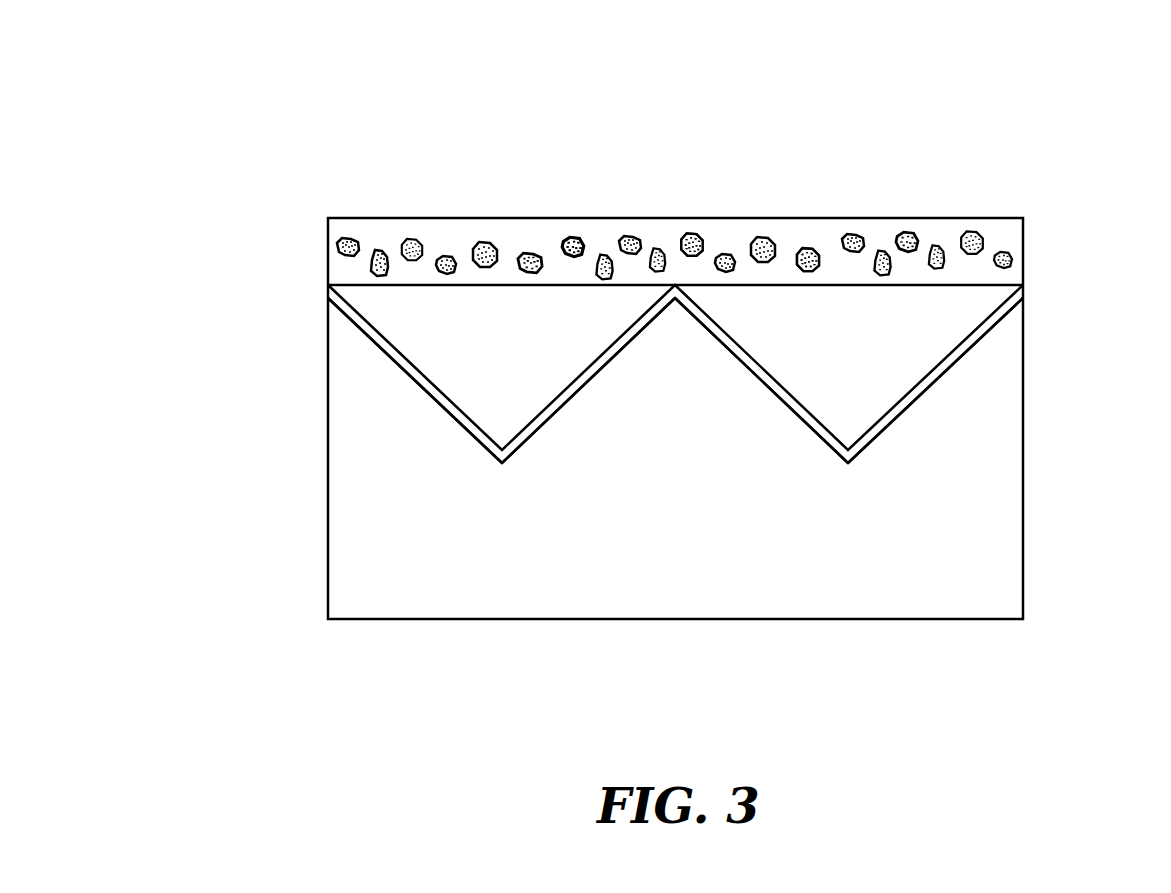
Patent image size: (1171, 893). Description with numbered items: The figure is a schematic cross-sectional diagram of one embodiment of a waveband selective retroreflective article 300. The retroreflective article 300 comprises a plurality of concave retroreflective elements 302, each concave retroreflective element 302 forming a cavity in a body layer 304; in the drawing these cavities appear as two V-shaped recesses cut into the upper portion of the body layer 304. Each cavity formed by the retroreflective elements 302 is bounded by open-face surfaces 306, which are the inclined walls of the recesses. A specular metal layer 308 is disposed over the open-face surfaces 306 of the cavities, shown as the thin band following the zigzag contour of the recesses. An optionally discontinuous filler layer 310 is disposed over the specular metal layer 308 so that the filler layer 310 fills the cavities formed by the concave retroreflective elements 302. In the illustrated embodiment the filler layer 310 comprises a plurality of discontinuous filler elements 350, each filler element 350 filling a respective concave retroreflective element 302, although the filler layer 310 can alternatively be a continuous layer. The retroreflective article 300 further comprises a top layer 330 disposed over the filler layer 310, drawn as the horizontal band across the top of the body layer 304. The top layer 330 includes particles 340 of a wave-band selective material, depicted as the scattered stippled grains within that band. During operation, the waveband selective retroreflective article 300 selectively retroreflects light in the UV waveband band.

The retroreflective article 300 is at (328, 77).
The concave retroreflective element 302 is at (402, 192).
The body layer 304 is at (335, 518).
The open-face surfaces 306 is at (592, 365).
The specular metal layer 308 is at (463, 425).
The filler layer 310 is at (530, 400).
The top layer 330 is at (510, 232).
The particles 340 is at (572, 243).
The filler elements 350 is at (416, 314).